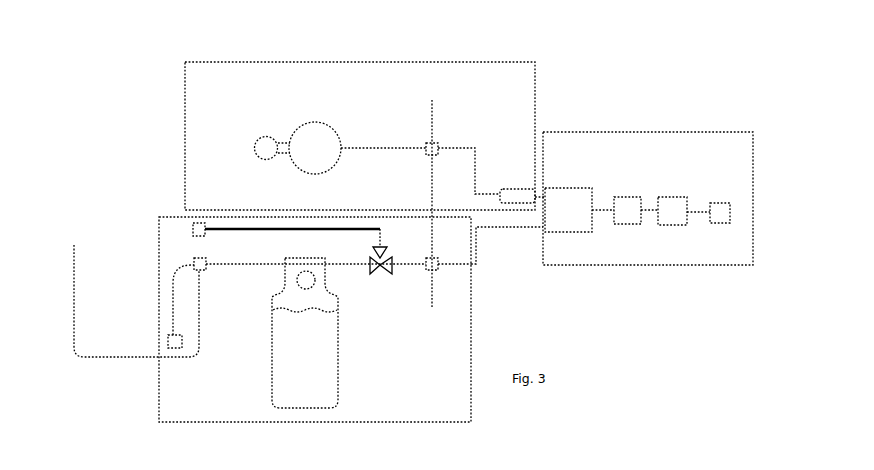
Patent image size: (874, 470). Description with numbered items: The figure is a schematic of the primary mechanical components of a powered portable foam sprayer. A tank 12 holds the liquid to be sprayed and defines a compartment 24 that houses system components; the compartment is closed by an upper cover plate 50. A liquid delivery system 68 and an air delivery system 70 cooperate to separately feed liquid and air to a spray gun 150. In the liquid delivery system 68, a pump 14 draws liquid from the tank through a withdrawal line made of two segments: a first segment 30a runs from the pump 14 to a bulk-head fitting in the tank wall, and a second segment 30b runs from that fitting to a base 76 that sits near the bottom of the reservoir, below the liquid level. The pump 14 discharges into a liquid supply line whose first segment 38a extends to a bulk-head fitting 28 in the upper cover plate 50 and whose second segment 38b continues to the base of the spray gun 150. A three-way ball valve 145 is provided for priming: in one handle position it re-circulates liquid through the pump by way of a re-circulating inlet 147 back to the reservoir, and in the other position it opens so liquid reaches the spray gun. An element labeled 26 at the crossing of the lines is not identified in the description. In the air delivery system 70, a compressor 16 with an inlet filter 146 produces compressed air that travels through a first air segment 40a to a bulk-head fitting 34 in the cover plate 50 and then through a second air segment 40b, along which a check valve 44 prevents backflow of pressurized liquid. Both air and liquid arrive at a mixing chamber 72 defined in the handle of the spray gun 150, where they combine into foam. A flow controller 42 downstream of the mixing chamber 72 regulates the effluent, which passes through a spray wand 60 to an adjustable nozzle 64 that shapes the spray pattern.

The tank 12 is at (74, 265).
The pump 14 is at (337, 372).
The compressor 16 is at (307, 128).
The compartment 24 is at (97, 305).
The valve 26 is at (437, 278).
The bulk-head fitting 28 is at (206, 272).
The first segment of liquid withdrawal line 30a is at (250, 263).
The second segment of liquid withdrawal line 30b is at (173, 290).
The bulk-head fitting 34 is at (426, 156).
The first segment of liquid supply line 38a is at (415, 267).
The second segment of liquid supply line 38b is at (465, 268).
The first segment of air supply line 40a is at (412, 150).
The second segment of air supply line 40b is at (455, 150).
The flow controller 42 is at (627, 197).
The check valve 44 is at (517, 190).
The upper cover plate 50 is at (434, 120).
The spray wand 60 is at (673, 226).
The nozzle 64 is at (723, 203).
The liquid delivery system 68 is at (158, 390).
The air delivery system 70 is at (225, 62).
The mixing chamber 72 is at (567, 188).
The base 76 is at (167, 337).
The three-way ball valve 145 is at (381, 267).
The inlet filter 146 is at (255, 145).
The re-circulating inlet 147 is at (313, 232).
The spray gun 150 is at (753, 215).